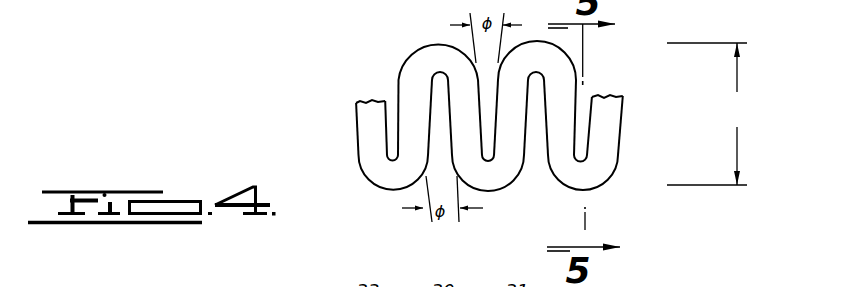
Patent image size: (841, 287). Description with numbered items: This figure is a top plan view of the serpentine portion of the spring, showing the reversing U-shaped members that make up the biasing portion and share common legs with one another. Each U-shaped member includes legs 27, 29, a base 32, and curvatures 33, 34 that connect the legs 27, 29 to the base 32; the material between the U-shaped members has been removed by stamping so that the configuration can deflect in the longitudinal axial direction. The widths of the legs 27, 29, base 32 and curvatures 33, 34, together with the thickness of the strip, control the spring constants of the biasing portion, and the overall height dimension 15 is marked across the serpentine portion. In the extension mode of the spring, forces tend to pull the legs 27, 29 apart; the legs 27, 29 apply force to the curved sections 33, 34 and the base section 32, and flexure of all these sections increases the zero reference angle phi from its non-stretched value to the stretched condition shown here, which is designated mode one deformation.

The leg 27 is at (358, 113).
The leg 29 is at (413, 102).
The curvature 33 is at (370, 173).
The curvature 34 is at (412, 176).
The base 32 is at (392, 189).
The height of serpentine strip 15 is at (707, 114).